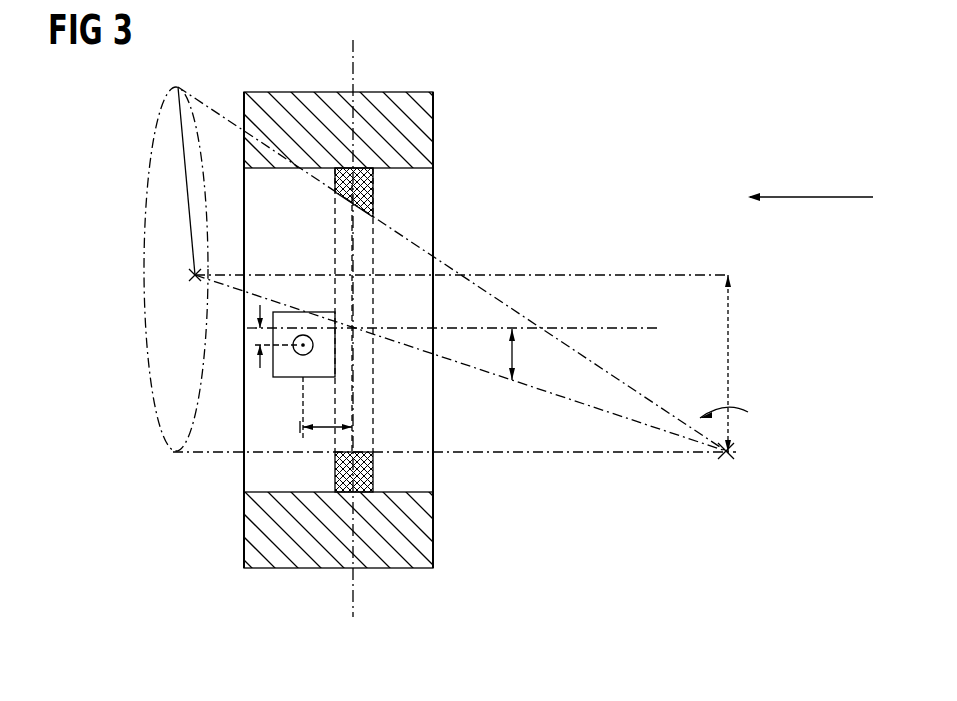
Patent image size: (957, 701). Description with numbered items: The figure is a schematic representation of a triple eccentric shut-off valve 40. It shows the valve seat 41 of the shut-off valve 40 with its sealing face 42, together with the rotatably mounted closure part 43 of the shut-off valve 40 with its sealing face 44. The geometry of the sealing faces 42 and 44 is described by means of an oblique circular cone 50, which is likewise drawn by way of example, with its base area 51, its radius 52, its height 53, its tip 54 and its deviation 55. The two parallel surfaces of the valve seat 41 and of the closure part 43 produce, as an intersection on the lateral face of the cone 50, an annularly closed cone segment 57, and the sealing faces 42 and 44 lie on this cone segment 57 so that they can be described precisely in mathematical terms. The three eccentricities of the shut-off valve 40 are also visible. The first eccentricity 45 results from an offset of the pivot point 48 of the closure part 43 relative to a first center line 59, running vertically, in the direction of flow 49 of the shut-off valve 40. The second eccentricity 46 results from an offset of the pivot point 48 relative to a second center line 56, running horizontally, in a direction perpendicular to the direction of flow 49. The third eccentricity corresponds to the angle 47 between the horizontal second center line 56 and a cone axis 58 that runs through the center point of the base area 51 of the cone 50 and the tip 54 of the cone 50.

The triple eccentric shut-off valve 40 is at (438, 78).
The valve seat 41 is at (440, 128).
The sealing face 42 is at (376, 180).
The closure part 43 is at (290, 312).
The sealing face 44 is at (335, 212).
The first eccentricity 45 is at (335, 452).
The second eccentricity 46 is at (257, 342).
The angle 47 is at (514, 353).
The pivot point 48 is at (308, 410).
The direction of flow 49 is at (815, 194).
The oblique circular cone 50 is at (738, 413).
The base area 51 is at (160, 412).
The radius 52 is at (184, 172).
The height 53 is at (633, 457).
The tip 54 is at (744, 450).
The deviation 55 is at (730, 366).
The second center line 56 is at (660, 330).
The annularly closed cone segment 57 is at (360, 396).
The cone axis 58 is at (530, 389).
The first center line 59 is at (355, 592).